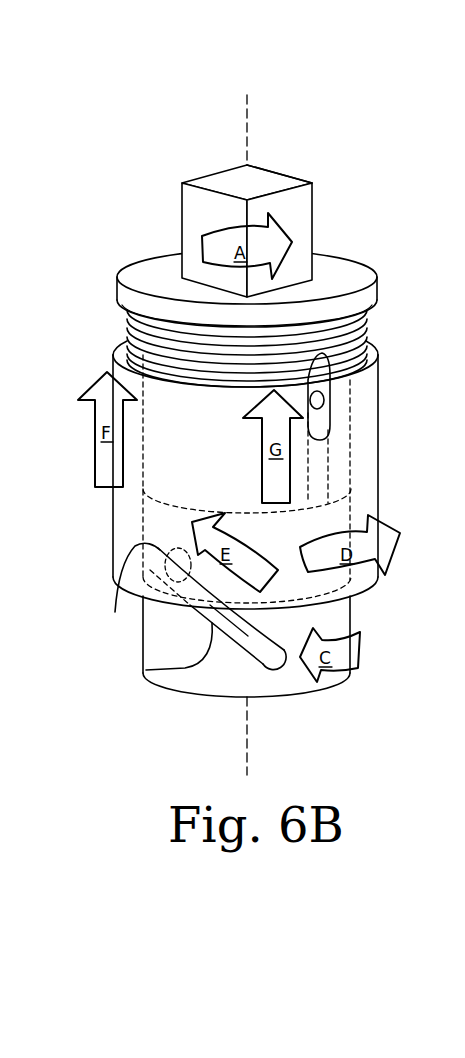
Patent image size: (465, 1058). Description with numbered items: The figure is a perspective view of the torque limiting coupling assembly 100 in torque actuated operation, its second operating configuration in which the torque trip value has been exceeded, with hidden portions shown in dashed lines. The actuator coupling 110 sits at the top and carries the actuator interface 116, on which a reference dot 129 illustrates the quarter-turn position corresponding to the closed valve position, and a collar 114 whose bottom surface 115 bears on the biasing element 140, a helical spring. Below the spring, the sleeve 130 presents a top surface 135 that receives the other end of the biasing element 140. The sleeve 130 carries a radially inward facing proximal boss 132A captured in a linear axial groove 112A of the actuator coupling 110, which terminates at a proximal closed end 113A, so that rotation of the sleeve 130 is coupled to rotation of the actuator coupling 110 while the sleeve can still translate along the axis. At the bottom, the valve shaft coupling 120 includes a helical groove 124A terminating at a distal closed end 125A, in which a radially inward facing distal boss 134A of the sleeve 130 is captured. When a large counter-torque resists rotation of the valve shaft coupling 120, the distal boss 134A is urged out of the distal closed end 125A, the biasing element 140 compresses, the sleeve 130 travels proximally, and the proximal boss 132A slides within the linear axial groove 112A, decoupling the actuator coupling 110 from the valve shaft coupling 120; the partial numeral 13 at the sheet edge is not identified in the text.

The torque limiting coupling assembly 100 is at (124, 177).
The actuator coupling 110 is at (348, 253).
The collar 114 is at (118, 307).
The bottom surface 115 is at (120, 313).
The actuator interface 116 is at (313, 207).
The reference dot 129 is at (300, 181).
The biasing element 140 is at (127, 324).
The top surface 135 is at (118, 352).
The sleeve 130 is at (113, 521).
The linear axial groove 112A is at (329, 452).
The proximal closed end 113A is at (324, 358).
The radially inward facing proximal boss 132A is at (326, 437).
The radially inward facing distal boss 134A is at (115, 612).
The distal closed end 125A is at (294, 681).
The valve shaft coupling 120 is at (203, 694).
The helical groove 124A is at (145, 662).
The partial numeral 13 is at (454, 677).